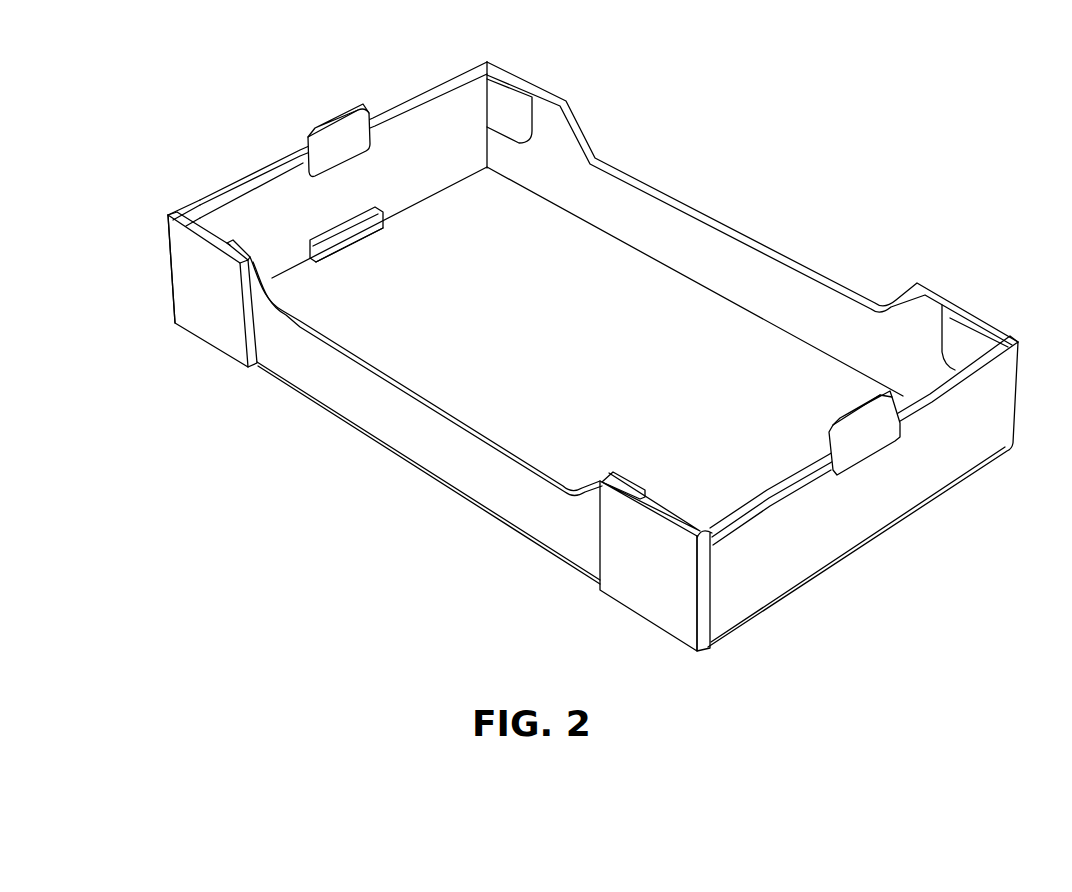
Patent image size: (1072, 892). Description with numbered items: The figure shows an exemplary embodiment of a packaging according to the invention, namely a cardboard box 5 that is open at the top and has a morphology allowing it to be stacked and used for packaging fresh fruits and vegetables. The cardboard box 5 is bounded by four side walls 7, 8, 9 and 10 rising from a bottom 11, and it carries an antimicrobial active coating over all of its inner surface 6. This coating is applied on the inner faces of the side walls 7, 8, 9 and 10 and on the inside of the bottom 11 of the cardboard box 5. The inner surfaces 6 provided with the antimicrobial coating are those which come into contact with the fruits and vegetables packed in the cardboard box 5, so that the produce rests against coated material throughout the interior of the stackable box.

The cardboard box 5 is at (376, 403).
The inner surface 6 is at (405, 148).
The side wall 7 is at (658, 189).
The side wall 8 is at (773, 497).
The side wall 9 is at (548, 455).
The side wall 10 is at (230, 193).
The bottom 11 is at (648, 383).